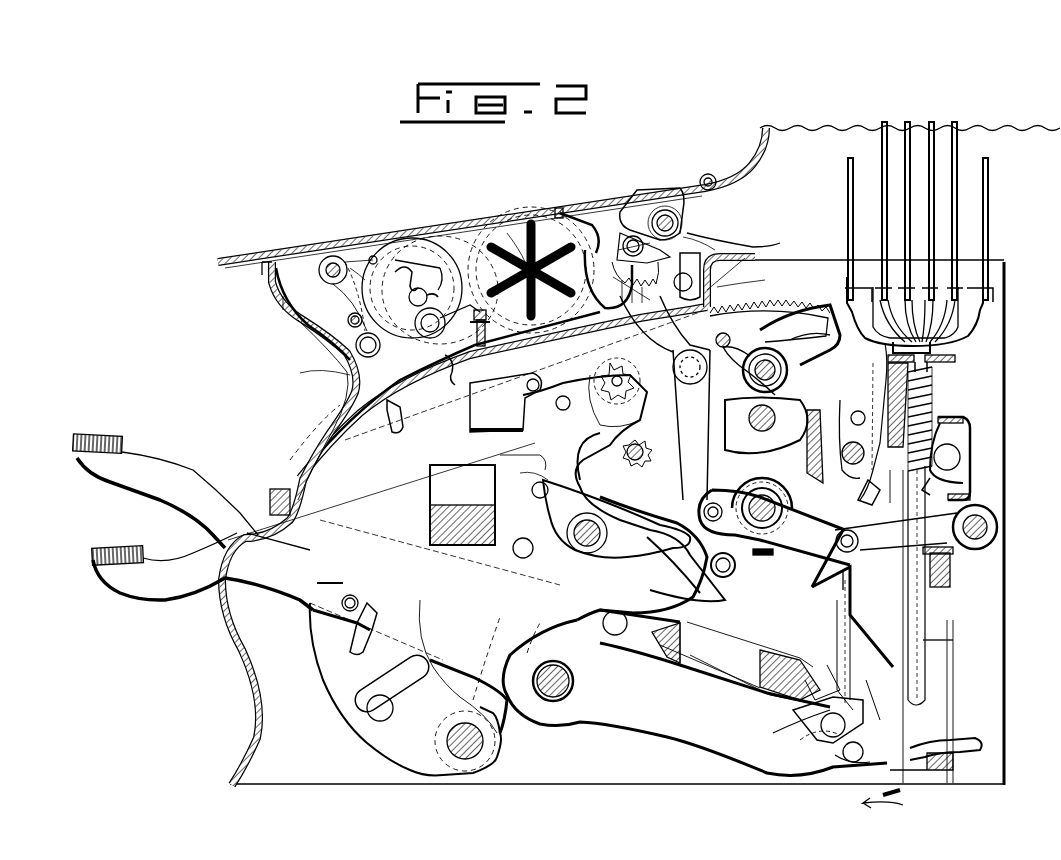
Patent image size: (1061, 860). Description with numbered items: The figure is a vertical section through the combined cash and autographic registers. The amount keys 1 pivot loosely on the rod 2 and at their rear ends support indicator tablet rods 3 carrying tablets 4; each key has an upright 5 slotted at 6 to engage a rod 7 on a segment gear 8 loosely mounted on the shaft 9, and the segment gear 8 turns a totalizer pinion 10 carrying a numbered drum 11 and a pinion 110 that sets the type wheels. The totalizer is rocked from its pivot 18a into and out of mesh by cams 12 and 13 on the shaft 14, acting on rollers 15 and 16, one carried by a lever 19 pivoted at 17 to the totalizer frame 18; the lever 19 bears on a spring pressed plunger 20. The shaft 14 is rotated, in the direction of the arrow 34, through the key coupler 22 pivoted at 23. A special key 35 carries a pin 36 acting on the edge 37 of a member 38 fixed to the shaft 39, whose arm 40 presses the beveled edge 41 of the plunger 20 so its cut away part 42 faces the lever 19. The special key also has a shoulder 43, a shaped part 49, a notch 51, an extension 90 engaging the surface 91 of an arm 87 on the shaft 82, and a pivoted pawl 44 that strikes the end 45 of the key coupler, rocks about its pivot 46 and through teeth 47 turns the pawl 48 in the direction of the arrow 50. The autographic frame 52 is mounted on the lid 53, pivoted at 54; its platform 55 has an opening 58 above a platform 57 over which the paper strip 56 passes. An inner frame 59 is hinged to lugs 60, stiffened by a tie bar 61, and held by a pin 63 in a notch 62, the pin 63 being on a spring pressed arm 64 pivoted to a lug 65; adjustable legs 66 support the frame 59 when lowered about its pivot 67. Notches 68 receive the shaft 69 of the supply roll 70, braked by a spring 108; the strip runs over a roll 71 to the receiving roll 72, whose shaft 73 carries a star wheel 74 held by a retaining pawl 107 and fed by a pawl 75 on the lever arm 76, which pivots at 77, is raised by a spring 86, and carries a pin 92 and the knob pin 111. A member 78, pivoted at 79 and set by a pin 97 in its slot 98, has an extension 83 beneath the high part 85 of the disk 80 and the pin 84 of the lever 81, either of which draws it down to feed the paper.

The amount keys 1 is at (163, 483).
The rod 2 is at (557, 707).
The indicator tablet rods 3 is at (920, 650).
The tablets 4 is at (846, 218).
The upright 5 is at (840, 620).
The slot 6 is at (867, 493).
The rod 7 is at (847, 460).
The segment gear 8 is at (793, 323).
The shaft 9 is at (750, 420).
The pinion of the totalizer 10 is at (630, 427).
The numbered drum 11 is at (607, 363).
The cam 12 is at (775, 420).
The cam 13 is at (727, 563).
The shaft 14 is at (817, 560).
The roller 15 is at (707, 470).
The roller 16 is at (722, 577).
The pivot 17 is at (627, 543).
The totalizer frame 18 is at (500, 455).
The pivot of the totalizer 18a is at (513, 563).
The lever 19 is at (516, 548).
The spring pressed plunger 20 is at (500, 477).
The key coupler 22 is at (700, 657).
The pivot 23 is at (618, 637).
The arrow 34 is at (843, 583).
The special keys 35 is at (170, 580).
The pin 36 is at (360, 590).
The edge 37 is at (353, 623).
The member 38 is at (343, 670).
The shaft 39 is at (465, 760).
The arm 40 is at (560, 590).
The beveled edge 41 is at (543, 480).
The cut away part 42 is at (533, 500).
The shoulder 43 is at (827, 680).
The pivoted pawl 44 is at (807, 727).
The end of the key coupler 45 is at (800, 707).
The pivot 46 is at (827, 740).
The teeth 47 is at (830, 755).
The pawl 48 is at (933, 730).
The shaped part of special key 49 is at (793, 740).
The arrow 50 is at (893, 806).
The notch 51 is at (867, 677).
The frame of the autographic register 52 is at (283, 302).
The lid 53 is at (370, 380).
The pivot 54 is at (709, 173).
The platform 55 is at (375, 262).
The strip of autographic paper 56 is at (467, 233).
The platform 57 is at (612, 238).
The opening 58 is at (590, 235).
The second frame 59 is at (430, 312).
The lugs 60 is at (717, 207).
The tie bar 61 is at (340, 370).
The notch 62 is at (347, 318).
The pin 63 is at (355, 345).
The spring pressed arm 64 is at (390, 410).
The lug 65 is at (312, 238).
The adjustable legs 66 is at (447, 360).
The pivot shaft 67 is at (683, 237).
The notches 68 is at (416, 303).
The shaft 69 is at (395, 275).
The supply roll 70 is at (438, 268).
The roll 71 is at (740, 246).
The receiving roll 72 is at (531, 260).
The shaft 73 is at (535, 345).
The star wheel 74 is at (507, 233).
The pawl 75 is at (603, 235).
The lever arm 76 is at (702, 335).
The pivot 77 is at (773, 370).
The member 78 is at (773, 303).
The pivot 79 is at (730, 350).
The disk 80 is at (813, 450).
The lever 81 is at (848, 543).
The shaft 82 is at (990, 530).
The extension 83 is at (708, 507).
The pin 84 is at (613, 517).
The high part 85 is at (647, 473).
The spring 86 is at (807, 330).
The arms 87 is at (953, 547).
The extension 90 is at (917, 654).
The surface 91 is at (952, 618).
The pin 92 is at (663, 208).
The pin 97 is at (717, 287).
The slot 98 is at (753, 263).
The spring pressed retaining pawl 107 is at (477, 247).
The spring 108 is at (365, 277).
The pinions 110 is at (530, 430).
The pin 111 is at (623, 240).